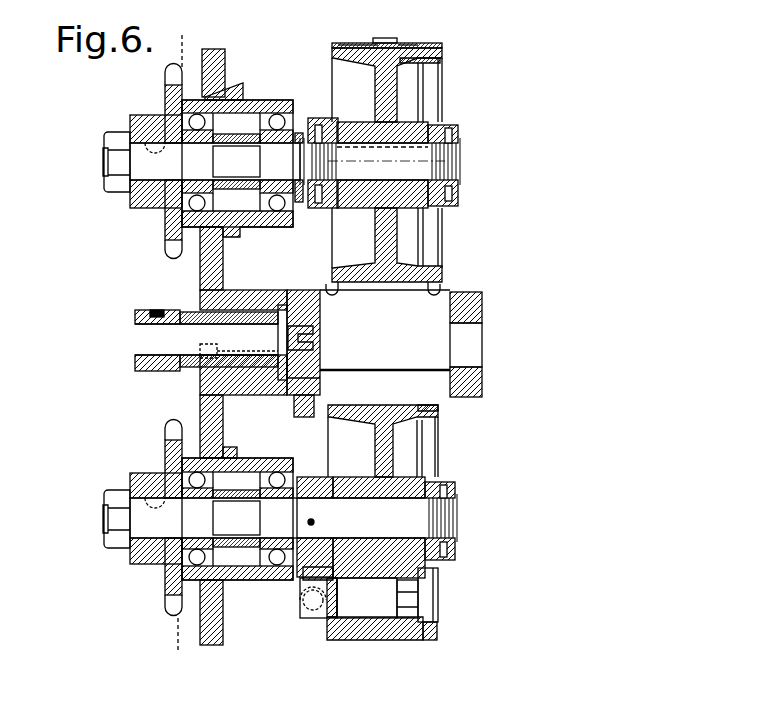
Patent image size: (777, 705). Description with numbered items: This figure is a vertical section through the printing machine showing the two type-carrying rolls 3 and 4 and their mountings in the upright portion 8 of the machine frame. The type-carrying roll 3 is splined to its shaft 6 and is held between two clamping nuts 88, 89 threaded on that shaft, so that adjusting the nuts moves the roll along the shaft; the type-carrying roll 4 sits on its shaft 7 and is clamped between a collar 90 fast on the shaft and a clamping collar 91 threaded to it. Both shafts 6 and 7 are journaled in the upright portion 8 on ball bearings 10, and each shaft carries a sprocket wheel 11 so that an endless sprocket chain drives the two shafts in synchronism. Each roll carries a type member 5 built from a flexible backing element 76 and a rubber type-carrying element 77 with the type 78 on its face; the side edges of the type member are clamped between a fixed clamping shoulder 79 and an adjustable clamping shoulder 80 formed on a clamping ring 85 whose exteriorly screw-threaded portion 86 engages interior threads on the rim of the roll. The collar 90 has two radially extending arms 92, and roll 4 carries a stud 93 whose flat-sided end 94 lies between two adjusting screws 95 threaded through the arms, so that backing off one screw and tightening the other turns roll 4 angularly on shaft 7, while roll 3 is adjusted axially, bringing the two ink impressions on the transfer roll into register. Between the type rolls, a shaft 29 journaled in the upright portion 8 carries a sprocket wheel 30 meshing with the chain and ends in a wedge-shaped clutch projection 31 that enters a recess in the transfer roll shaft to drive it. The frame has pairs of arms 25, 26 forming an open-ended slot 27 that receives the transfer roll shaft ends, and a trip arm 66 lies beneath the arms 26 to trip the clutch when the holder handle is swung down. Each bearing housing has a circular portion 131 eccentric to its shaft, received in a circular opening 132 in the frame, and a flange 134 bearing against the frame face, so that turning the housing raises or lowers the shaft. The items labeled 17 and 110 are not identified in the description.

The type-carrying roll 3 is at (332, 53).
The type-carrying roll 4 is at (395, 458).
The type member 5 is at (418, 46).
The shaft 6 is at (400, 165).
The shaft 7 is at (297, 477).
The upright portion of the machine frame 8 is at (207, 260).
The ball bearings 10 is at (205, 120).
The sprocket wheel 11 is at (172, 94).
The axis line 17 is at (184, 345).
The arms 25 is at (482, 308).
The arms 26 is at (300, 292).
The open-ended slot 27 is at (470, 342).
The shaft 29 is at (200, 340).
The sprocket wheel 30 is at (168, 381).
The wedge-shaped clutch projection 31 is at (318, 340).
The trip arm 66 is at (300, 418).
The backing element 76 is at (345, 44).
The type-carrying element 77 is at (365, 44).
The type 78 is at (405, 44).
The fixed clamping shoulder 79 is at (333, 293).
The adjustable clamping shoulder 80 is at (440, 293).
The clamping ring 85 is at (432, 250).
The exteriorly screw-threaded portion 86 is at (432, 60).
The clamping nut 88 is at (322, 118).
The clamping nut 89 is at (458, 134).
The collar 90 is at (300, 572).
The clamping collar 91 is at (456, 492).
The radially extending arms 92 is at (302, 600).
The stud 93 is at (380, 602).
The flat-sided end 94 is at (305, 618).
The adjusting screws 95 is at (316, 612).
The rod 110 is at (406, 352).
The circular portion 131 is at (176, 246).
The circular opening 132 is at (228, 42).
The flange 134 is at (242, 90).